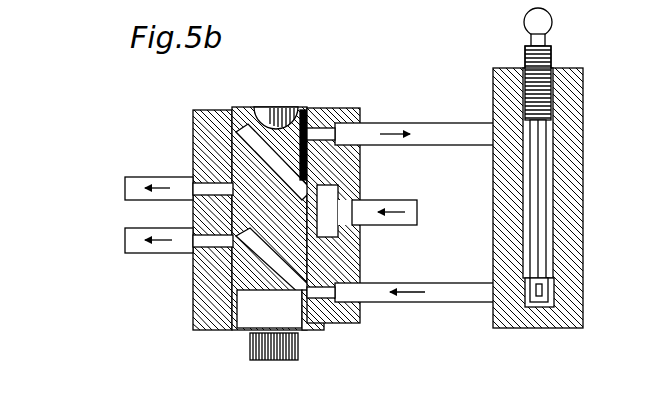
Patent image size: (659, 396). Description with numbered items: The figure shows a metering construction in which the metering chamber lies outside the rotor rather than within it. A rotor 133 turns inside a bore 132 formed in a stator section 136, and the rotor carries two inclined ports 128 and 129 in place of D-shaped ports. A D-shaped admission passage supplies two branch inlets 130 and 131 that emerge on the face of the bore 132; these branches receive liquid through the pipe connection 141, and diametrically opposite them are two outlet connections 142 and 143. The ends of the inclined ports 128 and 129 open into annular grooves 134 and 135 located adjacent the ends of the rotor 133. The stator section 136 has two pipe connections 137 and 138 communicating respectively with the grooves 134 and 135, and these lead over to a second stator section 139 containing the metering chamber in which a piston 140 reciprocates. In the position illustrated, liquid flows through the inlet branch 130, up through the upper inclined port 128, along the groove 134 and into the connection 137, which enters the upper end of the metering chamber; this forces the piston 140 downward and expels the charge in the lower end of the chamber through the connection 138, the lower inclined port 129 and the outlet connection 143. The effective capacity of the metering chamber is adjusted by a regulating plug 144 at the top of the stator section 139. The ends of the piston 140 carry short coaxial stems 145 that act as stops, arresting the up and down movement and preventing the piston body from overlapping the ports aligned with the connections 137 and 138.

The inclined port 128 is at (262, 120).
The inclined port 129 is at (204, 321).
The inlet branch port 130 is at (323, 188).
The inlet branch port 131 is at (328, 241).
The bore 132 is at (194, 150).
The rotor 133 is at (194, 212).
The annular groove 134 is at (303, 112).
The annular groove 135 is at (320, 300).
The stator section 136 is at (194, 298).
The pipe connection 137 is at (447, 123).
The pipe connection 138 is at (465, 300).
The stator section 139 is at (584, 88).
The piston 140 is at (545, 198).
The pipe connection 141 is at (416, 200).
The outlet connection 142 is at (143, 178).
The outlet connection 143 is at (162, 253).
The regulating plug 144 is at (552, 55).
The coaxial stem 145 is at (548, 287).